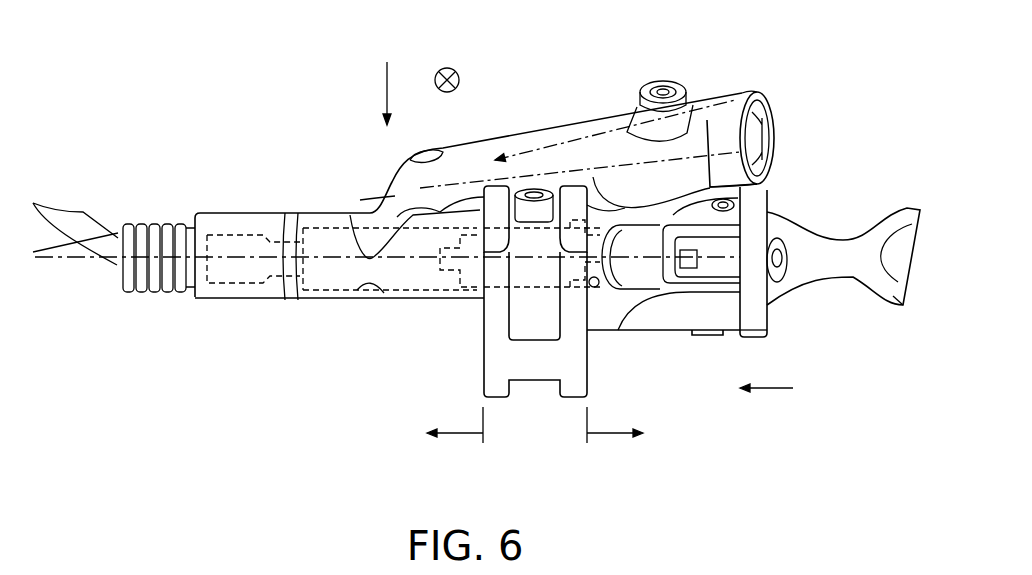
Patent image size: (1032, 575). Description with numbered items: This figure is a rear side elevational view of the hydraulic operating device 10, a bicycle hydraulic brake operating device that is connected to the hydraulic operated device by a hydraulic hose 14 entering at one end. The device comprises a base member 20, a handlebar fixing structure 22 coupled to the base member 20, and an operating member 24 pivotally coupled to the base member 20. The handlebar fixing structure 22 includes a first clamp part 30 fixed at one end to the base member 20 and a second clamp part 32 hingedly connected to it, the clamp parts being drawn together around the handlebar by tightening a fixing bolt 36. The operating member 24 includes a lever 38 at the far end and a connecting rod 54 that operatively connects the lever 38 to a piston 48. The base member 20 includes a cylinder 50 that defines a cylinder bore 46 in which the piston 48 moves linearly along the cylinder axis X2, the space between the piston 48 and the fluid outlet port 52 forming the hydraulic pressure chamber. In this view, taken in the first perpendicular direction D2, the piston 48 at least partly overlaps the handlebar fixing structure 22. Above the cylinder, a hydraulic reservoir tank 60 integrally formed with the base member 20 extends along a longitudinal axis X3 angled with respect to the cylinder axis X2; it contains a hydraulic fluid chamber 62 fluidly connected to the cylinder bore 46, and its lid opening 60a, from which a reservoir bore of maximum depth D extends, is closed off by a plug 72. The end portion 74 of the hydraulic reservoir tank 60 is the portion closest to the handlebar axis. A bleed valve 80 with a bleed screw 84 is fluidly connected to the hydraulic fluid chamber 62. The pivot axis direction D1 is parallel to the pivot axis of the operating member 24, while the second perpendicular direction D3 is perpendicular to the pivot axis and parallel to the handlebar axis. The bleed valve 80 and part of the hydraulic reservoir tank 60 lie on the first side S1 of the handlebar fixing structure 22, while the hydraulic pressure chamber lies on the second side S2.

The hydraulic operating device 10 is at (212, 92).
The hydraulic hose 14 is at (87, 228).
The base member 20 is at (664, 340).
The handlebar fixing structure 22 is at (474, 372).
The operating member 24 is at (848, 214).
The first clamp part 30 is at (482, 330).
The second clamp part 32 is at (430, 215).
The fixing bolt 36 is at (600, 177).
The lever 38 is at (881, 295).
The cylinder bore 46 is at (377, 300).
The piston 48 is at (530, 290).
The cylinder 50 is at (342, 302).
The fluid outlet port 52 is at (290, 298).
The connecting rod 54 is at (636, 275).
The hydraulic reservoir tank 60 is at (522, 133).
The lid opening 60a is at (763, 118).
The hydraulic fluid chamber 62 is at (596, 135).
The plug 72 is at (762, 128).
The end portion 74 is at (762, 170).
The bleed valve 80 is at (645, 72).
The bleed screw 84 is at (677, 78).
The cylinder axis X2 is at (234, 262).
The longitudinal axis X3 is at (361, 200).
The maximum depth D is at (559, 142).
The pivot axis direction D1 is at (385, 83).
The first perpendicular direction D2 is at (460, 76).
The second perpendicular direction D3 is at (793, 388).
The first side S1 is at (610, 437).
The second side S2 is at (462, 437).